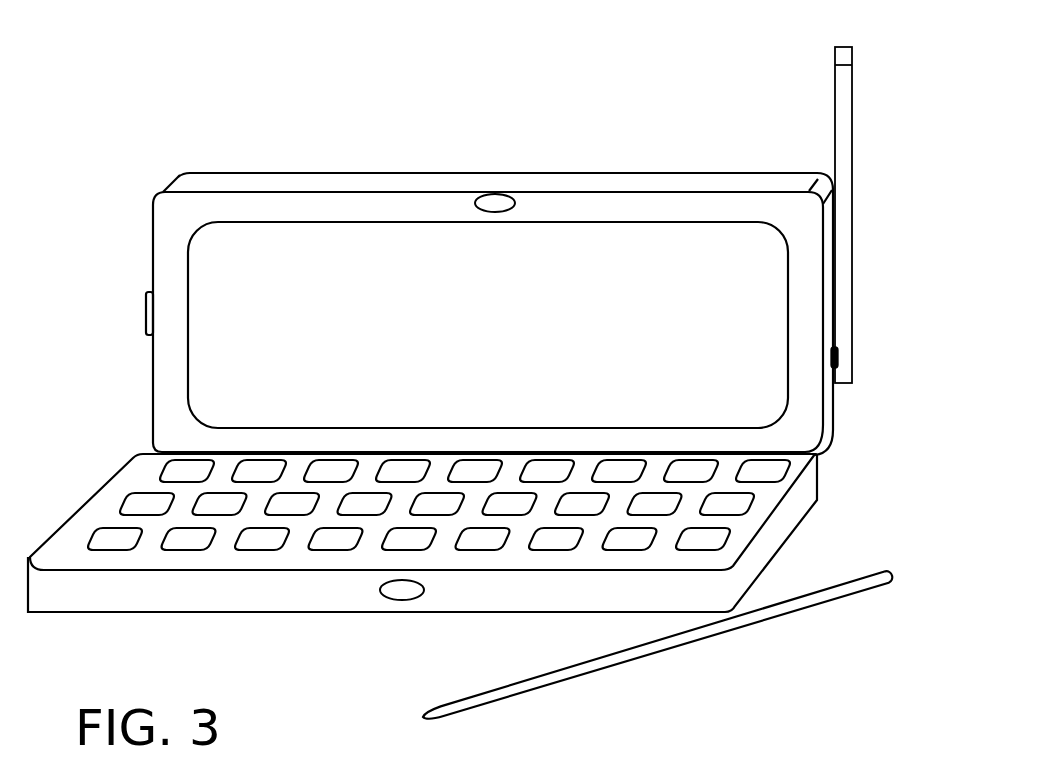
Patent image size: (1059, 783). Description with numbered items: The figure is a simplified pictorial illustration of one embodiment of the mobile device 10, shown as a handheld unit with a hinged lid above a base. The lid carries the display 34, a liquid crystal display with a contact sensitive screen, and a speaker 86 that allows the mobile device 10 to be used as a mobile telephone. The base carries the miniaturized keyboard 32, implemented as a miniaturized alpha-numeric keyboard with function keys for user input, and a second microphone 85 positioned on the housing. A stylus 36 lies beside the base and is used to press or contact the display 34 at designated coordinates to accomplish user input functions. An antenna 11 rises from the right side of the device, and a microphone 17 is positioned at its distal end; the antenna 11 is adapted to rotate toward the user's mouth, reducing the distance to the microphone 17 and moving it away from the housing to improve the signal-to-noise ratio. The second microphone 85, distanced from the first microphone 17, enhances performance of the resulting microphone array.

The mobile device 10 is at (548, 124).
The antenna 11 is at (853, 108).
The microphone 17 is at (837, 58).
The miniaturized keyboard 32 is at (748, 502).
The display 34 is at (502, 335).
The stylus 36 is at (661, 650).
The second microphone 85 is at (385, 597).
The speaker 86 is at (513, 198).